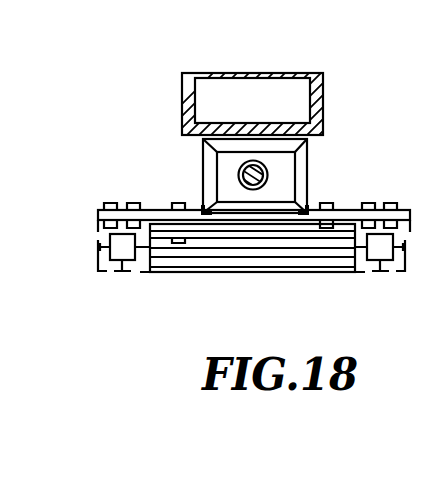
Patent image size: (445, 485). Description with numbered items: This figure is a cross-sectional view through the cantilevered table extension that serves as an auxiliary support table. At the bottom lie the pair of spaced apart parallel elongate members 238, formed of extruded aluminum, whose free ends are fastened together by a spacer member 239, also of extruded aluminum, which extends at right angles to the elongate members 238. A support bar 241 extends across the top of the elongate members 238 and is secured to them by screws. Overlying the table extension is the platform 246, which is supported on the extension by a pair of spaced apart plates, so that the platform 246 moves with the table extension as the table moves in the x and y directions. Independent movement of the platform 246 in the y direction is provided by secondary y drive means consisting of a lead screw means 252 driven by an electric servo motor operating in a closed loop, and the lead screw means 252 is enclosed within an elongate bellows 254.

The elongate members 238 is at (95, 267).
The spacer member 239 is at (229, 268).
The support bar 241 is at (148, 208).
The platform 246 is at (323, 93).
The lead screw means 252 is at (263, 168).
The elongate bellows 254 is at (307, 170).